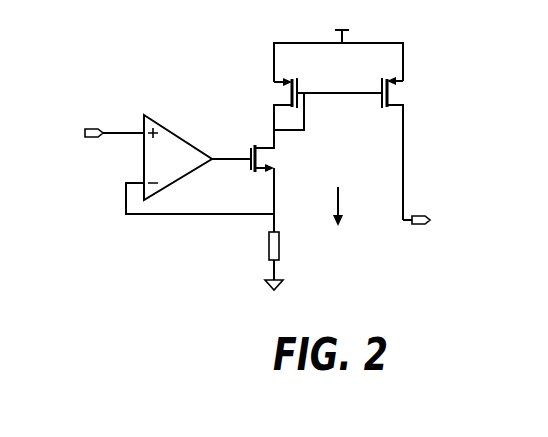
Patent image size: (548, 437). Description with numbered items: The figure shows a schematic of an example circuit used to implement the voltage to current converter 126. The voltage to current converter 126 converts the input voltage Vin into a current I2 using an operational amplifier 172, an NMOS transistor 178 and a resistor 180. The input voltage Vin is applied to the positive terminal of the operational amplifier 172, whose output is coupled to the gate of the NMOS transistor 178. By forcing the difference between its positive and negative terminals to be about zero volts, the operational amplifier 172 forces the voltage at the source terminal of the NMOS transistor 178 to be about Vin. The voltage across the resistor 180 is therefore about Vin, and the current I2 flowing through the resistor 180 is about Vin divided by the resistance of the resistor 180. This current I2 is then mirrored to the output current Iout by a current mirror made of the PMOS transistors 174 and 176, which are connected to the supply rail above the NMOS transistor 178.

The voltage to current converter 126 is at (109, 39).
The operational amplifier 172 is at (167, 127).
The PMOS transistor 174 is at (287, 105).
The PMOS transistor 176 is at (391, 107).
The NMOS transistor 178 is at (266, 170).
The resistor 180 is at (280, 242).